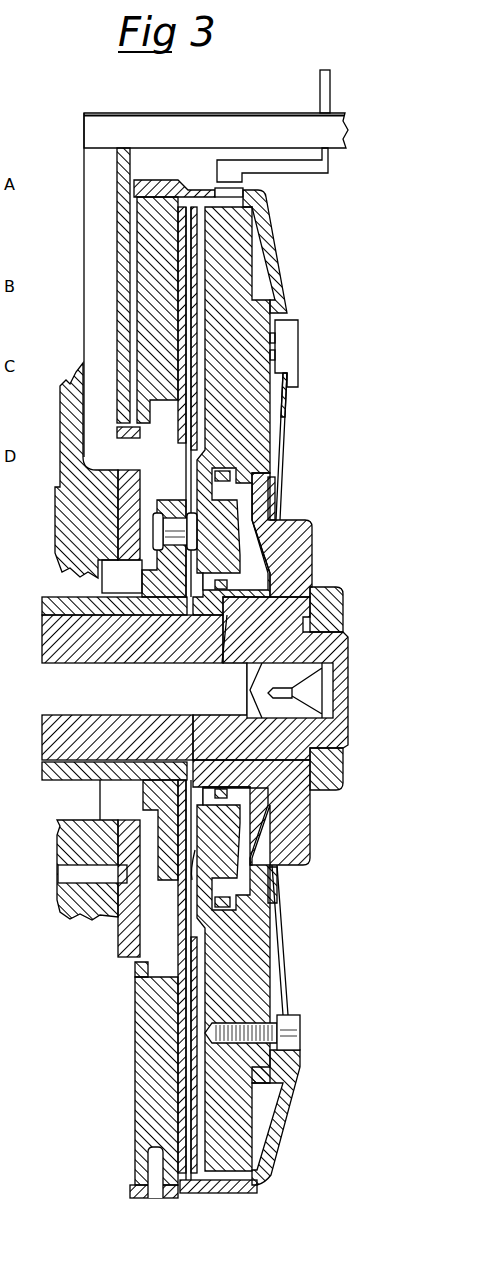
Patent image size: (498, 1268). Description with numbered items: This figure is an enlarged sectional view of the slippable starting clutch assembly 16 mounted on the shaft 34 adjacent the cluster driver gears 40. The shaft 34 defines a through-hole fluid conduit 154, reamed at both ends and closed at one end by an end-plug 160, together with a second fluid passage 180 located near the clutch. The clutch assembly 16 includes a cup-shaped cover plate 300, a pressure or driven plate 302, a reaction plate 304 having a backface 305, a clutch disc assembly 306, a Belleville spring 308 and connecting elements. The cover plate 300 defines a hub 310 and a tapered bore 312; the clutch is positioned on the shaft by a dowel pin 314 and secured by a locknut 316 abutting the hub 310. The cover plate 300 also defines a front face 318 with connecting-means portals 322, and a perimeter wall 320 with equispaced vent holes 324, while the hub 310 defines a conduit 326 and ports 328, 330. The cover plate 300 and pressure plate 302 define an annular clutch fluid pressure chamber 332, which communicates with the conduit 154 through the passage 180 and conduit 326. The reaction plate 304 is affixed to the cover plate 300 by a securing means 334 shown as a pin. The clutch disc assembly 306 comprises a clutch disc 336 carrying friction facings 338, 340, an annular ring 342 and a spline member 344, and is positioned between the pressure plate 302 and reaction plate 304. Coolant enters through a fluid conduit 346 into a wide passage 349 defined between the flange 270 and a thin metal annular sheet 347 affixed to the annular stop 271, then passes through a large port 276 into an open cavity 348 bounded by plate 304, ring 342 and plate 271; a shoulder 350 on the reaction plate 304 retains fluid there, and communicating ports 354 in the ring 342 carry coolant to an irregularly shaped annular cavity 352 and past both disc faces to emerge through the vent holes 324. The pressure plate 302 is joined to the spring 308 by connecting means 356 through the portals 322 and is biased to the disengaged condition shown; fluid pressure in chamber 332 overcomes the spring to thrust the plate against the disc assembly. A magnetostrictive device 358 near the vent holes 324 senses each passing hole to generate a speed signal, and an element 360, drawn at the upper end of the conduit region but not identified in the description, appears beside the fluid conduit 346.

The clutch assembly 16 is at (319, 233).
The shaft 34 is at (42, 752).
The cluster driver gears 40 is at (42, 776).
The through-hole fluid conduit 154 is at (96, 693).
The end-plug 160 is at (333, 688).
The second fluid passage 180 is at (252, 658).
The flange 270 is at (60, 487).
The annular stop 271 is at (126, 562).
The large port 276 is at (141, 456).
The cover plate 300 is at (279, 1175).
The pressure plate 302 is at (255, 1194).
The reaction plate 304 is at (143, 1062).
The backface 305 is at (135, 1016).
The clutch disc assembly 306 is at (166, 946).
The Belleville spring 308 is at (288, 946).
The hub 310 is at (295, 520).
The tapered bore 312 is at (265, 780).
The dowel pin 314 is at (293, 767).
The locknut 316 is at (345, 579).
The front face 318 is at (287, 264).
The perimeter wall 320 is at (168, 1200).
The connecting-means portals 322 is at (265, 1000).
The vent holes 324 is at (243, 188).
The conduit 326 is at (257, 603).
The port 328 is at (270, 575).
The port 330 is at (227, 620).
The annular clutch fluid pressure chamber 332 is at (263, 583).
The securing means 334 is at (155, 1198).
The clutch disc 336 is at (188, 1193).
The friction facing 338 is at (178, 1137).
The friction facing 340 is at (213, 1193).
The annular ring 342 is at (182, 905).
The spline member 344 is at (143, 793).
The fluid conduit 346 is at (274, 113).
The thin metal annular sheet 347 is at (117, 160).
The open cavity 348 is at (174, 458).
The wide passage 349 is at (98, 370).
The shoulder 350 is at (153, 418).
The annular cavity 352 is at (180, 896).
The communicating ports 354 is at (179, 488).
The connecting means 356 is at (302, 1032).
The magnetostrictive device 358 is at (217, 168).
The rod 360 is at (330, 76).